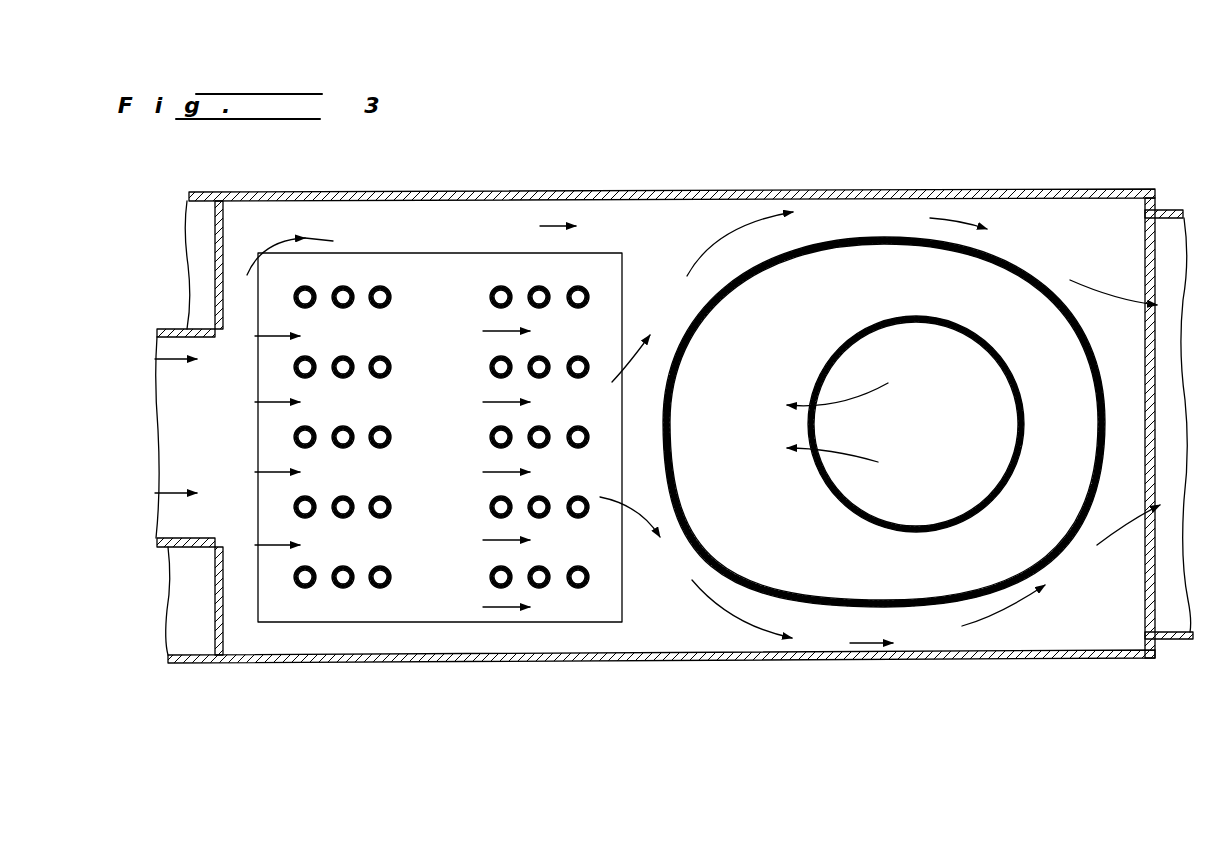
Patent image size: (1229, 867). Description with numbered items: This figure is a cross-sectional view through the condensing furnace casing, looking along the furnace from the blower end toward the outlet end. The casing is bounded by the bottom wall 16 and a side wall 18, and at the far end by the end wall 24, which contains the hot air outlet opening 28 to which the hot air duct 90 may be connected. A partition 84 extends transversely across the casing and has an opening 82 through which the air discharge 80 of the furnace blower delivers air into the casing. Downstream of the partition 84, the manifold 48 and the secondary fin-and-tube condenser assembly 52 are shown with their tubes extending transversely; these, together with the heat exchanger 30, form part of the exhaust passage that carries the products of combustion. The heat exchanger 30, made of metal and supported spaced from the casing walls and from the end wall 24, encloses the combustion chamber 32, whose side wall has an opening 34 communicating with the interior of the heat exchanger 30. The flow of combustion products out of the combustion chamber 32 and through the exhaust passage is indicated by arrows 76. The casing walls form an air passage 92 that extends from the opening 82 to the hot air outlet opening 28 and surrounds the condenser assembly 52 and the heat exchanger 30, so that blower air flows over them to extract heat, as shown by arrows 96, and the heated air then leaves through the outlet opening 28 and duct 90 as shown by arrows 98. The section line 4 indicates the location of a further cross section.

The section line 4- 4 is at (163, 403).
The bottom wall 16 is at (738, 191).
The side wall 18 is at (708, 665).
The end wall 24 is at (1158, 200).
The hot air outlet opening 28 is at (1150, 627).
The heat exchanger 30 is at (868, 296).
The combustion chamber 32 is at (922, 429).
The opening 34 is at (835, 485).
The manifold 48 is at (414, 268).
The secondary fin-and-tube condenser assembly 52 is at (380, 398).
The arrows 76 is at (835, 401).
The air discharge 80 is at (183, 547).
The opening 82 is at (212, 362).
The partition 84 is at (224, 228).
The hot air duct 90 is at (1178, 627).
The air passage 92 is at (679, 242).
The arrows 96 is at (888, 622).
The arrows 98 is at (1090, 283).